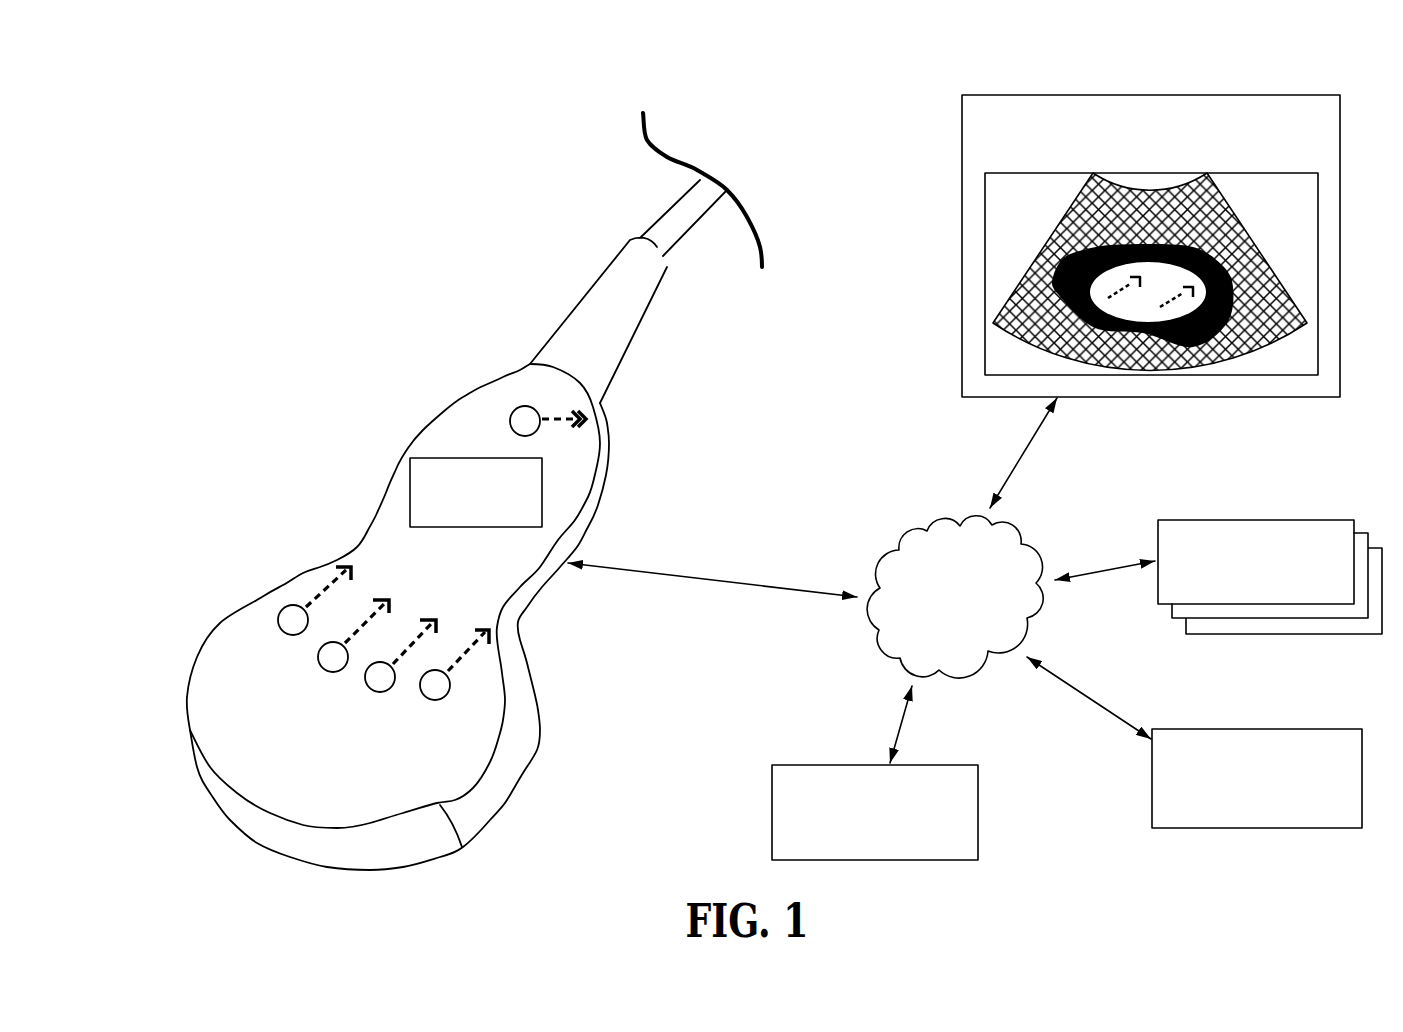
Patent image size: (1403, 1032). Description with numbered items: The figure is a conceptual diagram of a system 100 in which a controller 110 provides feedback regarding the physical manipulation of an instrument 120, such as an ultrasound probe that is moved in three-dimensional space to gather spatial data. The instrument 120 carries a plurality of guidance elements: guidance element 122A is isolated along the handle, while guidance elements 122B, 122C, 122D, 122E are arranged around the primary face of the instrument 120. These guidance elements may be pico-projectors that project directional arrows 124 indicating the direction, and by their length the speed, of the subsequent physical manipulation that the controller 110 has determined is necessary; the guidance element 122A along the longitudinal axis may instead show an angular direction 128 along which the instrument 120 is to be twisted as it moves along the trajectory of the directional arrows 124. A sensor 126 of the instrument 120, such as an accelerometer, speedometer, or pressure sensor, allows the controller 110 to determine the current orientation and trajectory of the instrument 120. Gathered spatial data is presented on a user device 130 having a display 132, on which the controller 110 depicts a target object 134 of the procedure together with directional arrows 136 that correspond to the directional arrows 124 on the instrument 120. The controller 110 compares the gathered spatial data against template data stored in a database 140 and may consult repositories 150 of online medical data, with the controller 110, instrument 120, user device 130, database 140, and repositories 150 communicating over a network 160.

The system 100 is at (1253, 43).
The controller 110 is at (858, 838).
The instrument 120 is at (470, 290).
The guidance element 122A is at (526, 412).
The guidance element 122B is at (293, 620).
The guidance element 122C is at (333, 657).
The guidance element 122D is at (380, 677).
The guidance element 122E is at (435, 685).
The directional arrows 124 is at (460, 655).
The sensor 126 is at (459, 514).
The angular direction 128 is at (541, 422).
The user device 130 is at (1135, 154).
The display 132 is at (993, 360).
The target object 134 is at (1093, 232).
The directional arrows 136 is at (1117, 295).
The database 140 is at (1241, 803).
The repositories 150 is at (1239, 586).
The network 160 is at (940, 629).